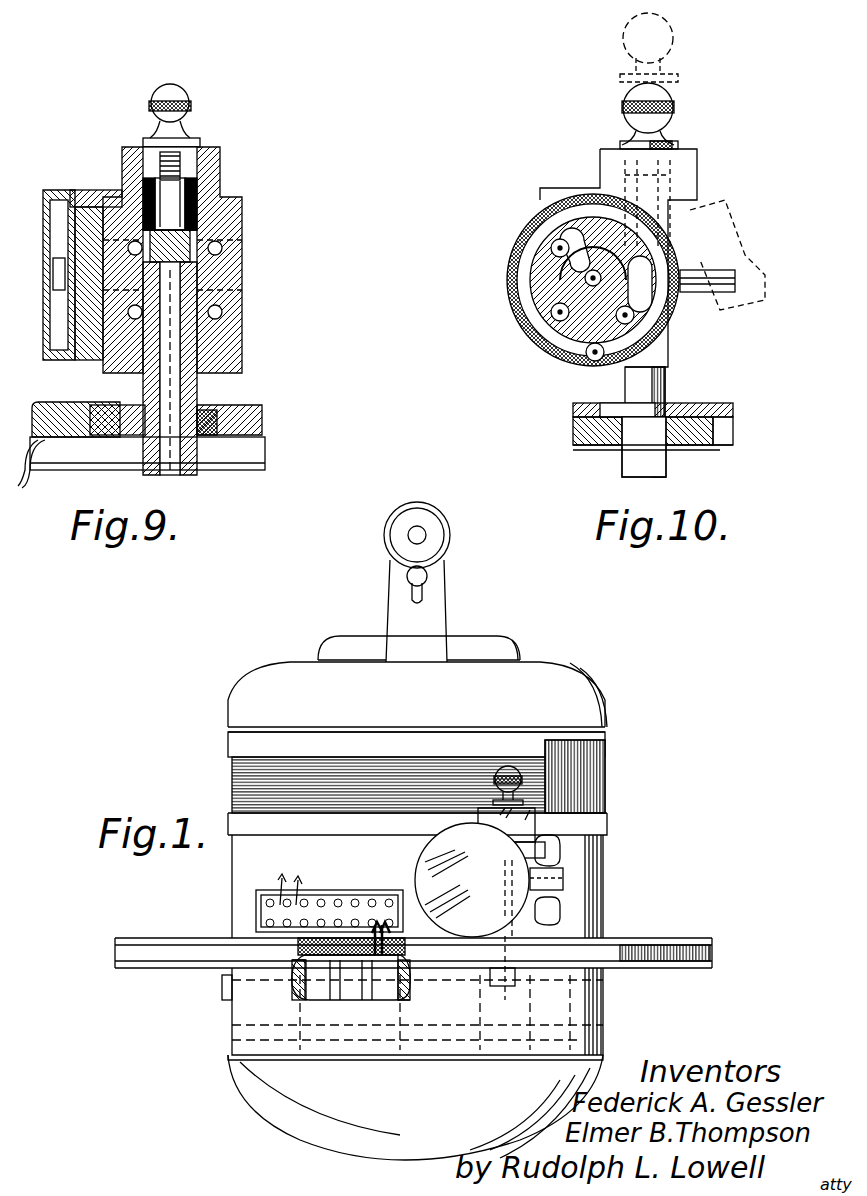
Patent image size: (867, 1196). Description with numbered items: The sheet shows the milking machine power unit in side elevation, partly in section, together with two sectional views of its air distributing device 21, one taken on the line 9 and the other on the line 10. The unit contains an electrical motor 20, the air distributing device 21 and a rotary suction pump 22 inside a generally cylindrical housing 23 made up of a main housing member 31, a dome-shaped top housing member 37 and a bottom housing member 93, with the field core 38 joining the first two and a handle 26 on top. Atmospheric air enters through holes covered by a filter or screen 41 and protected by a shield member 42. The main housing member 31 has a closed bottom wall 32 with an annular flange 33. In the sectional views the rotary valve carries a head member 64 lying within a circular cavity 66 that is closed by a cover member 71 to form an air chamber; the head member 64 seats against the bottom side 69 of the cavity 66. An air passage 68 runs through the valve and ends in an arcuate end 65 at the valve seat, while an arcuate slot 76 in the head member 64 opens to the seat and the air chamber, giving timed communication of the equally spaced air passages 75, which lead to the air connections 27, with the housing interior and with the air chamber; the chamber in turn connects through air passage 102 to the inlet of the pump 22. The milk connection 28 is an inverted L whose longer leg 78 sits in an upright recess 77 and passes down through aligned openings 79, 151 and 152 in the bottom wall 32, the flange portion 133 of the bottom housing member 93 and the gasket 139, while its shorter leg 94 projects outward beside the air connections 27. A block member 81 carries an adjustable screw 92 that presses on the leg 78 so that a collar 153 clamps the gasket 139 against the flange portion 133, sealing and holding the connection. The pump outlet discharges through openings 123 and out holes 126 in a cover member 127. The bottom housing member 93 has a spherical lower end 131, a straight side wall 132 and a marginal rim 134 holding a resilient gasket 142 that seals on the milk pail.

In FIG. 1, the section line 9- 9 is at (520, 743).
In FIG. 9, the section line 10- 10 is at (80, 152).
In FIG. 1, the electrical motor 20 is at (608, 782).
In FIG. 1, the air distributing device 21 is at (412, 850).
In FIG. 1, the rotary suction pump 22 is at (322, 977).
In FIG. 1, the housing 23 is at (624, 910).
In FIG. 1, the handle 26 is at (450, 548).
In FIG. 1, the air connections 27 is at (552, 848).
In FIG. 10, the milk connection 28 is at (725, 268).
In FIG. 1, the milk connection 28 is at (565, 878).
In FIG. 1, the main housing member 31 is at (216, 890).
In FIG. 9, the bottom wall 32 is at (258, 420).
In FIG. 10, the bottom wall 32 is at (725, 405).
In FIG. 9, the annular flange 33 is at (108, 408).
In FIG. 10, the annular flange 33 is at (573, 418).
In FIG. 1, the top housing member 37 is at (214, 735).
In FIG. 1, the field core 38 is at (608, 800).
In FIG. 1, the filter or screen 41 is at (220, 990).
In FIG. 1, the shield member 42 is at (478, 641).
In FIG. 9, the head member 64 is at (60, 358).
In FIG. 10, the head member 64 is at (545, 292).
In FIG. 10, the arcuate passage end 65 is at (570, 235).
In FIG. 9, the circular cavity 66 is at (70, 195).
In FIG. 10, the circular cavity 66 is at (520, 270).
In FIG. 9, the air passage 68 is at (243, 262).
In FIG. 10, the air passage 68 is at (593, 286).
In FIG. 9, the bottom side of cavity 69 is at (85, 210).
In FIG. 10, the bottom side of cavity 69 is at (535, 318).
In FIG. 9, the cover member 71 is at (52, 182).
In FIG. 1, the cover member 71 is at (462, 886).
In FIG. 9, the air passages 75 is at (222, 248).
In FIG. 10, the air passages 75 is at (550, 248).
In FIG. 9, the arcuate slot 76 is at (60, 290).
In FIG. 10, the arcuate slot 76 is at (575, 345).
In FIG. 9, the upright recess 77 is at (215, 412).
In FIG. 9, the longer leg 78 is at (190, 388).
In FIG. 10, the longer leg 78 is at (668, 382).
In FIG. 9, the opening 79 is at (235, 410).
In FIG. 10, the opening 79 is at (680, 405).
In FIG. 9, the block member 81 is at (132, 150).
In FIG. 10, the block member 81 is at (690, 165).
In FIG. 1, the block member 81 is at (486, 807).
In FIG. 9, the adjustable screw 92 is at (186, 138).
In FIG. 10, the adjustable screw 92 is at (670, 142).
In FIG. 1, the adjustable screw 92 is at (515, 775).
In FIG. 1, the bottom housing member 93 is at (218, 1024).
In FIG. 10, the shorter leg 94 is at (790, 283).
In FIG. 1, the shorter leg 94 is at (545, 876).
In FIG. 10, the air passage 102 is at (600, 352).
In FIG. 1, the openings 123 is at (378, 958).
In FIG. 1, the holes 126 is at (388, 895).
In FIG. 1, the cover member 127 is at (320, 895).
In FIG. 1, the spherical lower end 131 is at (385, 1155).
In FIG. 1, the straight side wall 132 is at (606, 996).
In FIG. 9, the flange or top portion 133 is at (115, 440).
In FIG. 10, the flange or top portion 133 is at (595, 447).
In FIG. 9, the marginal rim 134 is at (95, 432).
In FIG. 1, the marginal rim 134 is at (706, 955).
In FIG. 9, the gasket 139 is at (250, 440).
In FIG. 10, the gasket 139 is at (680, 445).
In FIG. 9, the resilient gasket 142 is at (22, 490).
In FIG. 9, the opening 151 is at (140, 470).
In FIG. 10, the opening 151 is at (618, 448).
In FIG. 9, the opening 152 is at (200, 445).
In FIG. 10, the opening 152 is at (643, 434).
In FIG. 9, the collar 153 is at (140, 405).
In FIG. 10, the collar 153 is at (690, 395).